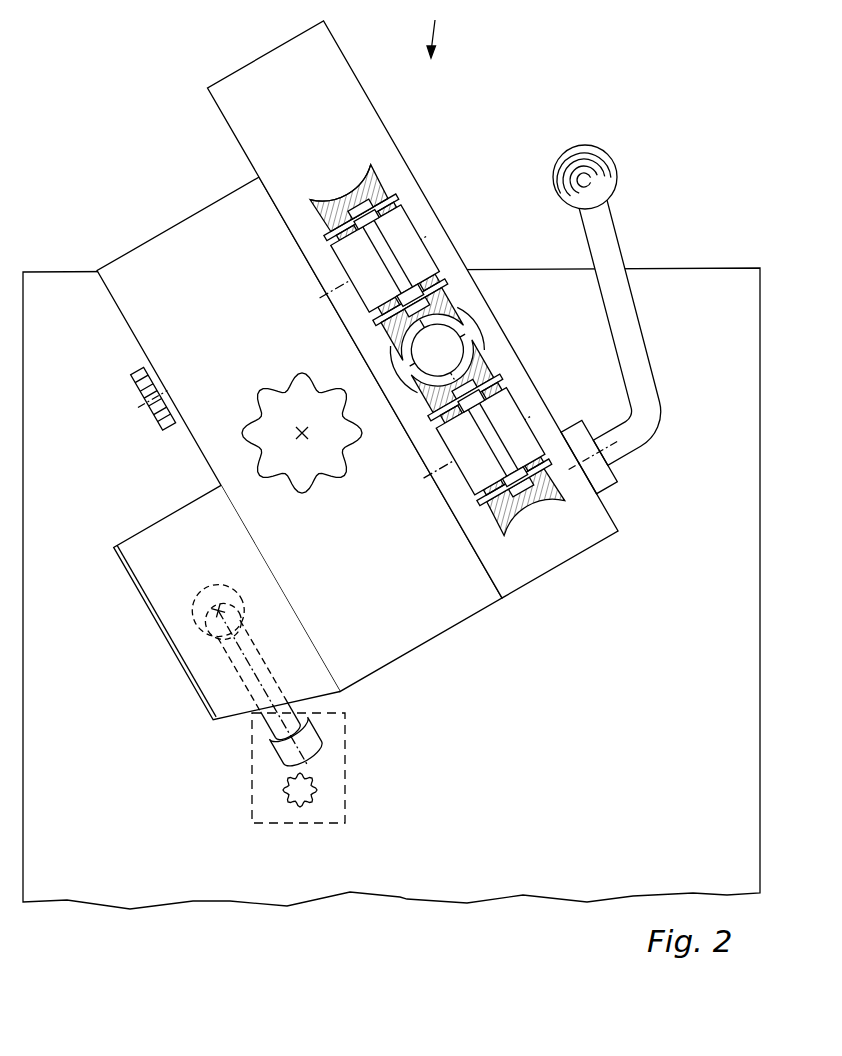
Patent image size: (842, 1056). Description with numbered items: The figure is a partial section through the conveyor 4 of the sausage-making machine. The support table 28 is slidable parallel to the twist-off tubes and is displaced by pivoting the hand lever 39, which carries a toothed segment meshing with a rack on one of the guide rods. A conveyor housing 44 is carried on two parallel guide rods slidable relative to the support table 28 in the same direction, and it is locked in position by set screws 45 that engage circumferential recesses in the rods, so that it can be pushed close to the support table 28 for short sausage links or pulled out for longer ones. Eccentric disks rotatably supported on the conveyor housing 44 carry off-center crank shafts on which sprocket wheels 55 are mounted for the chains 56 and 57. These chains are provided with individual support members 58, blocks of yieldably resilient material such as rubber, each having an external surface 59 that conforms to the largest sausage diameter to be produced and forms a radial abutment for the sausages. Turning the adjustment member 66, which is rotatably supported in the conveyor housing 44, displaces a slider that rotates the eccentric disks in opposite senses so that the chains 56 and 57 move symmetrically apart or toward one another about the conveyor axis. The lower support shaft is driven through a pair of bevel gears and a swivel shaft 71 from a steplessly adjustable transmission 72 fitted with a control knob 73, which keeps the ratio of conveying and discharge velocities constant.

The conveyor 4 is at (443, 36).
The support table 28 is at (543, 553).
The hand lever 39 is at (609, 250).
The conveyor housing 44 is at (445, 614).
The set screws 45 is at (165, 422).
The sprocket wheels 55 is at (402, 226).
The chain 56 is at (420, 288).
The chain 57 is at (491, 410).
The support members 58 is at (373, 191).
The external surface 59 is at (333, 197).
The adjustment member 66 is at (314, 470).
The swivel shaft 71 is at (272, 700).
The steplessly adjustable transmission 72 is at (337, 750).
The control knob 73 is at (307, 790).